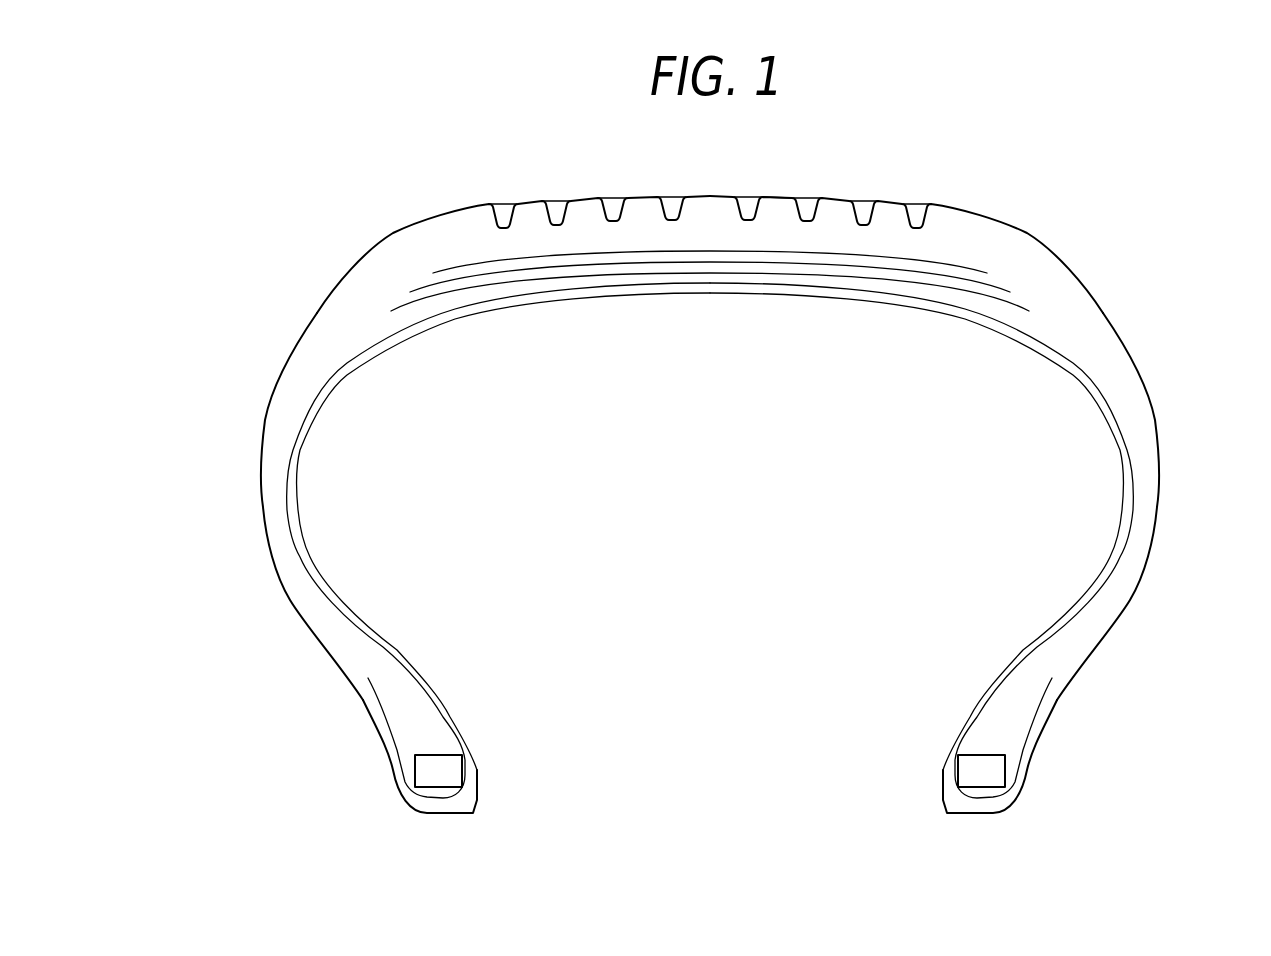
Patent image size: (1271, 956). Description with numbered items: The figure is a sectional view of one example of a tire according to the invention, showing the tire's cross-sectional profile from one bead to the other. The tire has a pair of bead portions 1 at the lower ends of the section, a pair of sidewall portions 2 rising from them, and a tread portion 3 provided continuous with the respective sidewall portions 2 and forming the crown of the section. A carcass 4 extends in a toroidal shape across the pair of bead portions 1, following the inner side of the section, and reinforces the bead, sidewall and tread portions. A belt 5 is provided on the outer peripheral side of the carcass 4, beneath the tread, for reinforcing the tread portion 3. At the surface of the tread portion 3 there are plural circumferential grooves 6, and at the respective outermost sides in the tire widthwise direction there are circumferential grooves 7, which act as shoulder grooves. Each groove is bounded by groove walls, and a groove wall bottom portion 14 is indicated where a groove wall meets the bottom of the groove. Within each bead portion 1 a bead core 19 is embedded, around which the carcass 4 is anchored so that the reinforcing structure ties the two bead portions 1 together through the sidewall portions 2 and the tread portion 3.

The bead portion 1 is at (376, 742).
The sidewall portion 2 is at (258, 492).
The tread portion 3 is at (998, 162).
The carcass 4 is at (287, 482).
The belt 5 is at (611, 250).
The circumferential groove 6 is at (560, 196).
The circumferential groove (shoulder groove) 7 is at (502, 197).
The groove wall bottom portion 14 is at (783, 195).
The bead core 19 is at (445, 770).